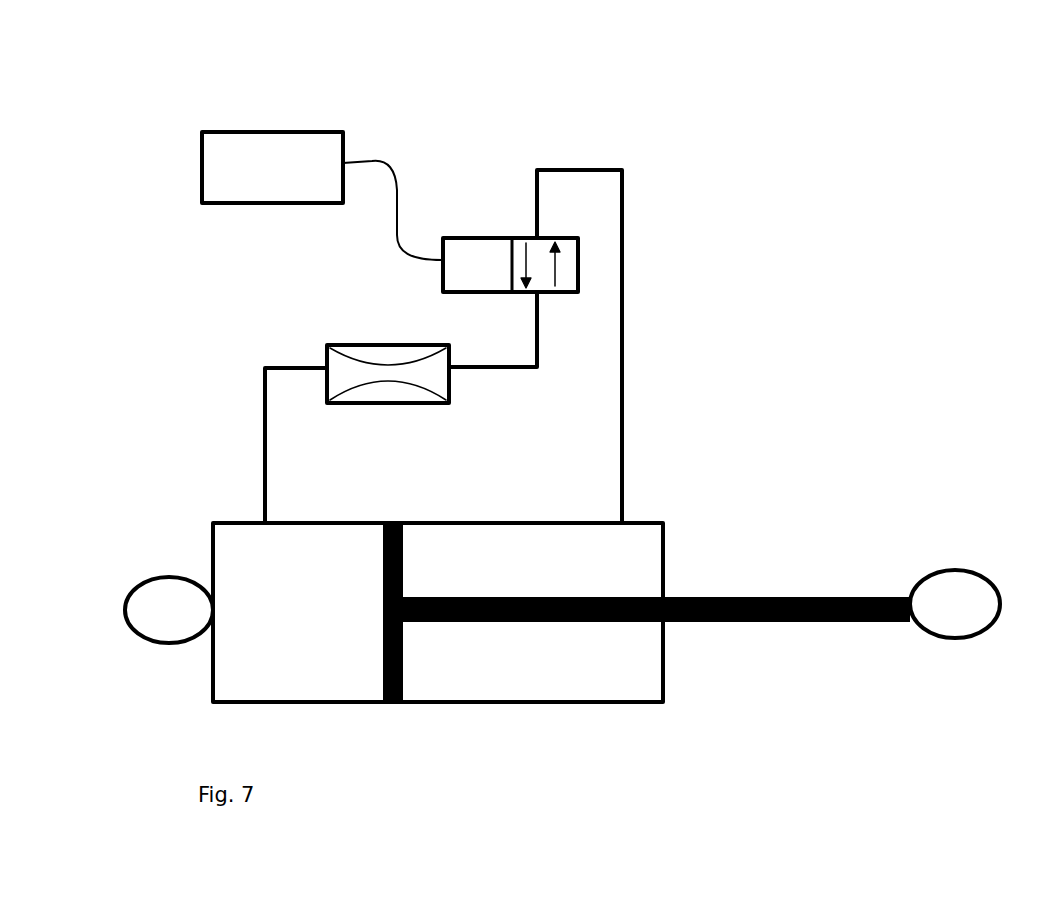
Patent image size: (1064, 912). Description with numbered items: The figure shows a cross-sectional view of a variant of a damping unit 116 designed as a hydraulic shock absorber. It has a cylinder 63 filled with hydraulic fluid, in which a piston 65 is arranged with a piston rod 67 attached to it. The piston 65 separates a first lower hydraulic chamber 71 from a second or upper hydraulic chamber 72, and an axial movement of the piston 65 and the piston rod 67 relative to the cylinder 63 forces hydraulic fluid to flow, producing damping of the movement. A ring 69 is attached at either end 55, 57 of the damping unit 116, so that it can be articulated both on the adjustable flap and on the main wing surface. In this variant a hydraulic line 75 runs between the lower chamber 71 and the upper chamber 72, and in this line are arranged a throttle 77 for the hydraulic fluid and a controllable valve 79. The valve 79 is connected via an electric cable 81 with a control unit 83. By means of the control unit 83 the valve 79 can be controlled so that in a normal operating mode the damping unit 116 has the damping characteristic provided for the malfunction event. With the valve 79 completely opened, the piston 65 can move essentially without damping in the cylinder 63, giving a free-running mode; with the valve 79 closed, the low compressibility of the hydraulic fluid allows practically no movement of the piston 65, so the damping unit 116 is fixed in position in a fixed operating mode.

The damping unit 116 is at (576, 117).
The control unit 83 is at (258, 131).
The electric cable 81 is at (378, 160).
The controllable valve 79 is at (465, 238).
The hydraulic line 75 is at (622, 355).
The throttle 77 is at (424, 403).
The cylinder 63 is at (335, 521).
The piston 65 is at (405, 568).
The piston rod 67 is at (695, 593).
The ring 69 is at (160, 643).
The first lower hydraulic chamber 71 is at (312, 625).
The second or upper hydraulic chamber 72 is at (524, 670).
The end 55 is at (136, 565).
The end 57 is at (992, 561).